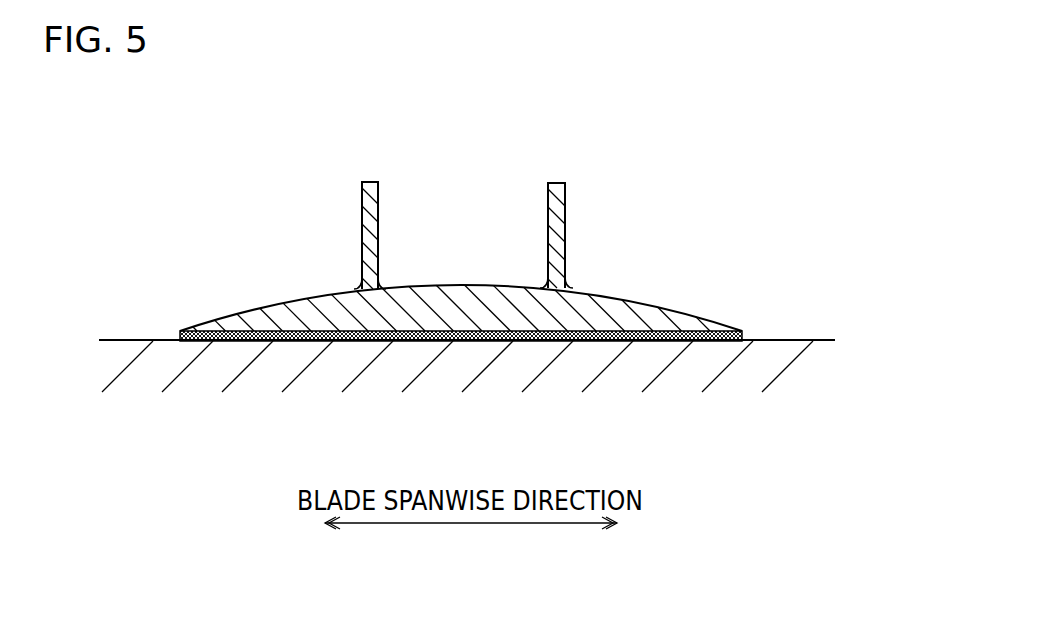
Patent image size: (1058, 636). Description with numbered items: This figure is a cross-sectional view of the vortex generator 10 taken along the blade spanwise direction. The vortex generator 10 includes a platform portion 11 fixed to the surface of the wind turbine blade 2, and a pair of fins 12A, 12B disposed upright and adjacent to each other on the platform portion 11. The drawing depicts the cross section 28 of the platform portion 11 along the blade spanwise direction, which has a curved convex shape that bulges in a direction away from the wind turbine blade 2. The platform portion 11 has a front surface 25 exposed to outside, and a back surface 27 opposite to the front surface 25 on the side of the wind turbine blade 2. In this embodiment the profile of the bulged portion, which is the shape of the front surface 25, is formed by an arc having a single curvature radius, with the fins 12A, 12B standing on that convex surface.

The vortex generator 10 is at (262, 192).
The fin 12A is at (361, 198).
The fin 12B is at (547, 197).
The cross section 28 is at (252, 322).
The front surface 25 is at (640, 300).
The platform portion 11 is at (692, 315).
The wind turbine blade 2 is at (793, 340).
The back surface 27 is at (650, 340).